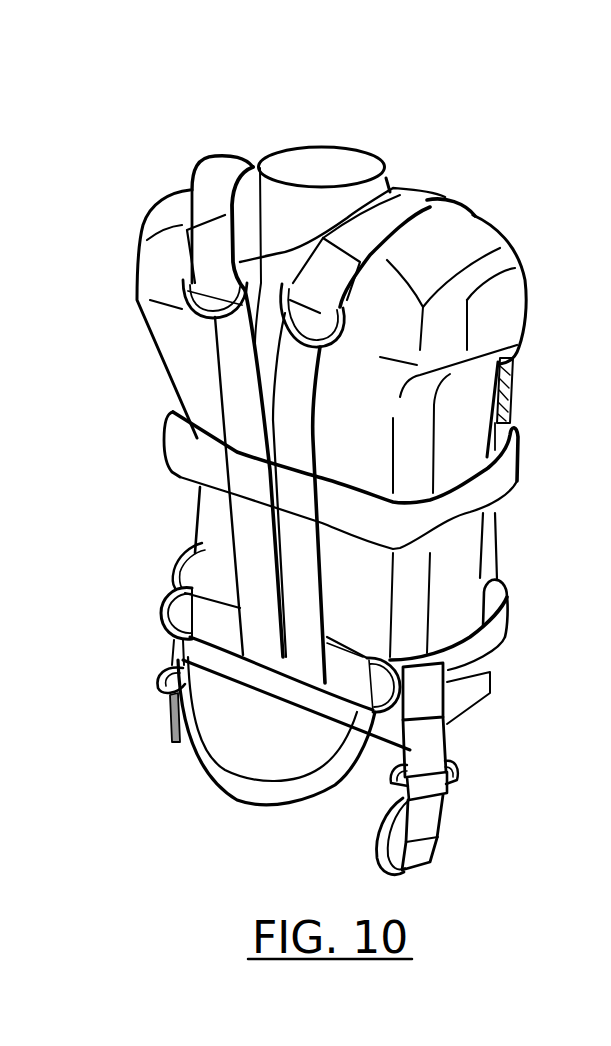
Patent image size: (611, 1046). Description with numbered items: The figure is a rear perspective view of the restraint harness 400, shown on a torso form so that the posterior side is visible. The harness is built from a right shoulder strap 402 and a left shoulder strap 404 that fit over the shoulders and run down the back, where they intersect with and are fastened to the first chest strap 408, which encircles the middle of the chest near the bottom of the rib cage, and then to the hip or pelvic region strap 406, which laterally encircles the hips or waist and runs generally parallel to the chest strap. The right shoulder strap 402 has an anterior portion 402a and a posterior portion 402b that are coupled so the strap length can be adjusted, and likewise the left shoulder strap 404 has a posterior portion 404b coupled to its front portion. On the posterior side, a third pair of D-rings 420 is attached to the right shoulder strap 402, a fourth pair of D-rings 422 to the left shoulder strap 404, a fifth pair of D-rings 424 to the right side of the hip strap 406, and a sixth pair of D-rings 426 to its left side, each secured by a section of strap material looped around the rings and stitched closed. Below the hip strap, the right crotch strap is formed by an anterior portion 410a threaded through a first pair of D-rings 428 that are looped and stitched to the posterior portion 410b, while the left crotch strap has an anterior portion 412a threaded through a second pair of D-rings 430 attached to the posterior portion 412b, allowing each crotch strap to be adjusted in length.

The restraint harness 400 is at (267, 72).
The right shoulder strap 402 is at (427, 193).
The anterior portion of right shoulder strap 402a is at (517, 398).
The posterior portion of right shoulder strap 402b is at (328, 452).
The left shoulder strap 404 is at (227, 155).
The posterior portion of left shoulder strap 404b is at (220, 367).
The hip or pelvic region strap 406 is at (512, 627).
The first chest strap 408 is at (517, 468).
The anterior portion of right crotch strap 410a is at (438, 847).
The posterior portion of right crotch strap 410b is at (462, 757).
The anterior portion of left crotch strap 412a is at (215, 795).
The posterior portion of left crotch strap 412b is at (173, 650).
The third pair of D-rings 420 is at (330, 345).
The fourth pair of D-rings 422 is at (195, 300).
The fifth pair of D-rings 424 is at (367, 718).
The sixth pair of D-rings 426 is at (163, 610).
The first pair of D-rings 428 is at (462, 770).
The second pair of D-rings 430 is at (163, 693).